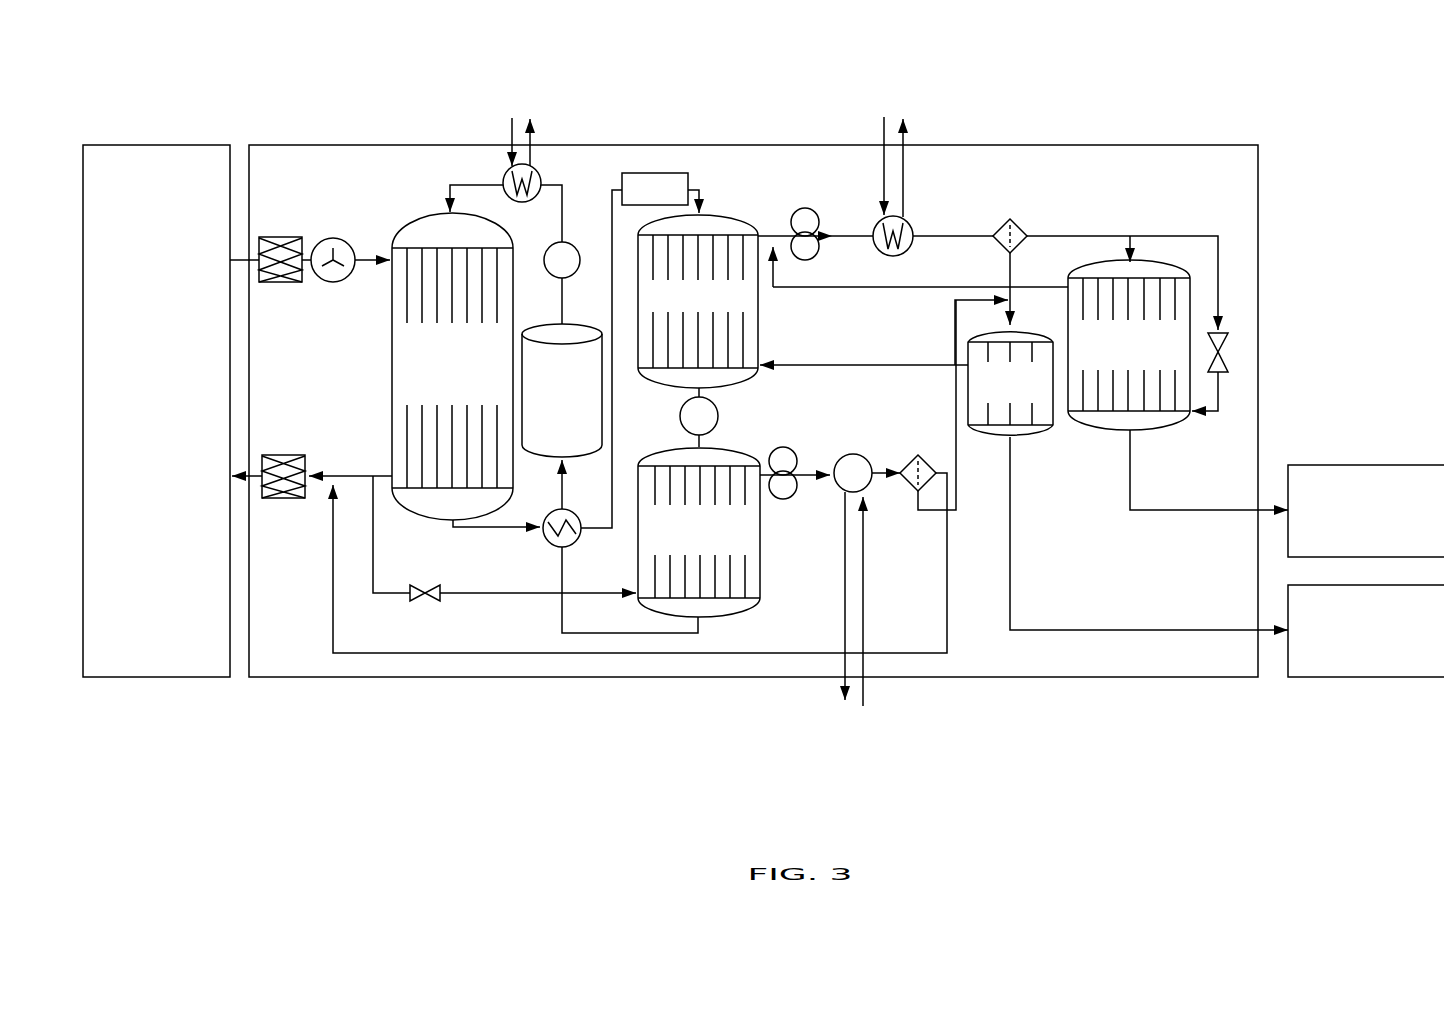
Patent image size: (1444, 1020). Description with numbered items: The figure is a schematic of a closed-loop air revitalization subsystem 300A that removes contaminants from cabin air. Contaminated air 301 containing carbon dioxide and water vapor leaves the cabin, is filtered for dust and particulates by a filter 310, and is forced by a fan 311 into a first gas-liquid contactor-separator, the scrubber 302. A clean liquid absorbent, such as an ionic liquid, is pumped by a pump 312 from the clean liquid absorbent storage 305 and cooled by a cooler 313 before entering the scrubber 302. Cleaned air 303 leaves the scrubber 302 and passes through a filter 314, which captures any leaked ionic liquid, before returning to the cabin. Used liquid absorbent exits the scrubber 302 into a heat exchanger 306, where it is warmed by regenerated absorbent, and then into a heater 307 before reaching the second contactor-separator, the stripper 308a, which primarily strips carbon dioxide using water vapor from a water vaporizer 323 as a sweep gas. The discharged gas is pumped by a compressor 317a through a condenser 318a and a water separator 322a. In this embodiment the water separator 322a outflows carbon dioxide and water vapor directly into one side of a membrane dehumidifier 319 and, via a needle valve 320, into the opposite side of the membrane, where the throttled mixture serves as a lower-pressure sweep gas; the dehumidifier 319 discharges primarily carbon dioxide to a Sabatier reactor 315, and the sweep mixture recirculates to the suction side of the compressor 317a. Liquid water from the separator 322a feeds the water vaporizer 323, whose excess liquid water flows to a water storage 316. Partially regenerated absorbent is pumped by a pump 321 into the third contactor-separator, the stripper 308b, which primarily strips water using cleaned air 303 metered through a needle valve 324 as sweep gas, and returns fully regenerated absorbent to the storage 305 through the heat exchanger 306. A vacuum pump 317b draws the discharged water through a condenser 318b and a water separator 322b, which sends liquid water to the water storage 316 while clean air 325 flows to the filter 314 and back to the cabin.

The closed-loop air revitalization subsystem 300A is at (262, 108).
The contaminated air 301 is at (130, 465).
The scrubber 302 is at (390, 360).
The cleaned air 303 is at (345, 474).
The clean liquid absorbent storage 305 is at (550, 322).
The heat exchanger 306 is at (548, 543).
The heater 307 is at (655, 172).
The stripper 308a is at (724, 214).
The stripper 308b is at (722, 448).
The filter 310 is at (284, 235).
The fan 311 is at (337, 236).
The pump 312 is at (570, 244).
The cooler 313 is at (540, 170).
The filter 314 is at (280, 453).
The Sabatier reactor 315 is at (1368, 463).
The water storage 316 is at (1372, 680).
The compressor 317a is at (816, 208).
The vacuum pump 317b is at (790, 447).
The condenser 318a is at (912, 217).
The condenser 318b is at (858, 453).
The membrane dehumidifier 319 is at (1176, 268).
The needle valve 320 is at (1226, 344).
The pump 321 is at (718, 413).
The water separator 322a is at (1011, 217).
The water separator 322b is at (921, 455).
The water vaporizer 323 is at (1040, 440).
The needle valve 324 is at (446, 597).
The clean air 325 is at (928, 655).